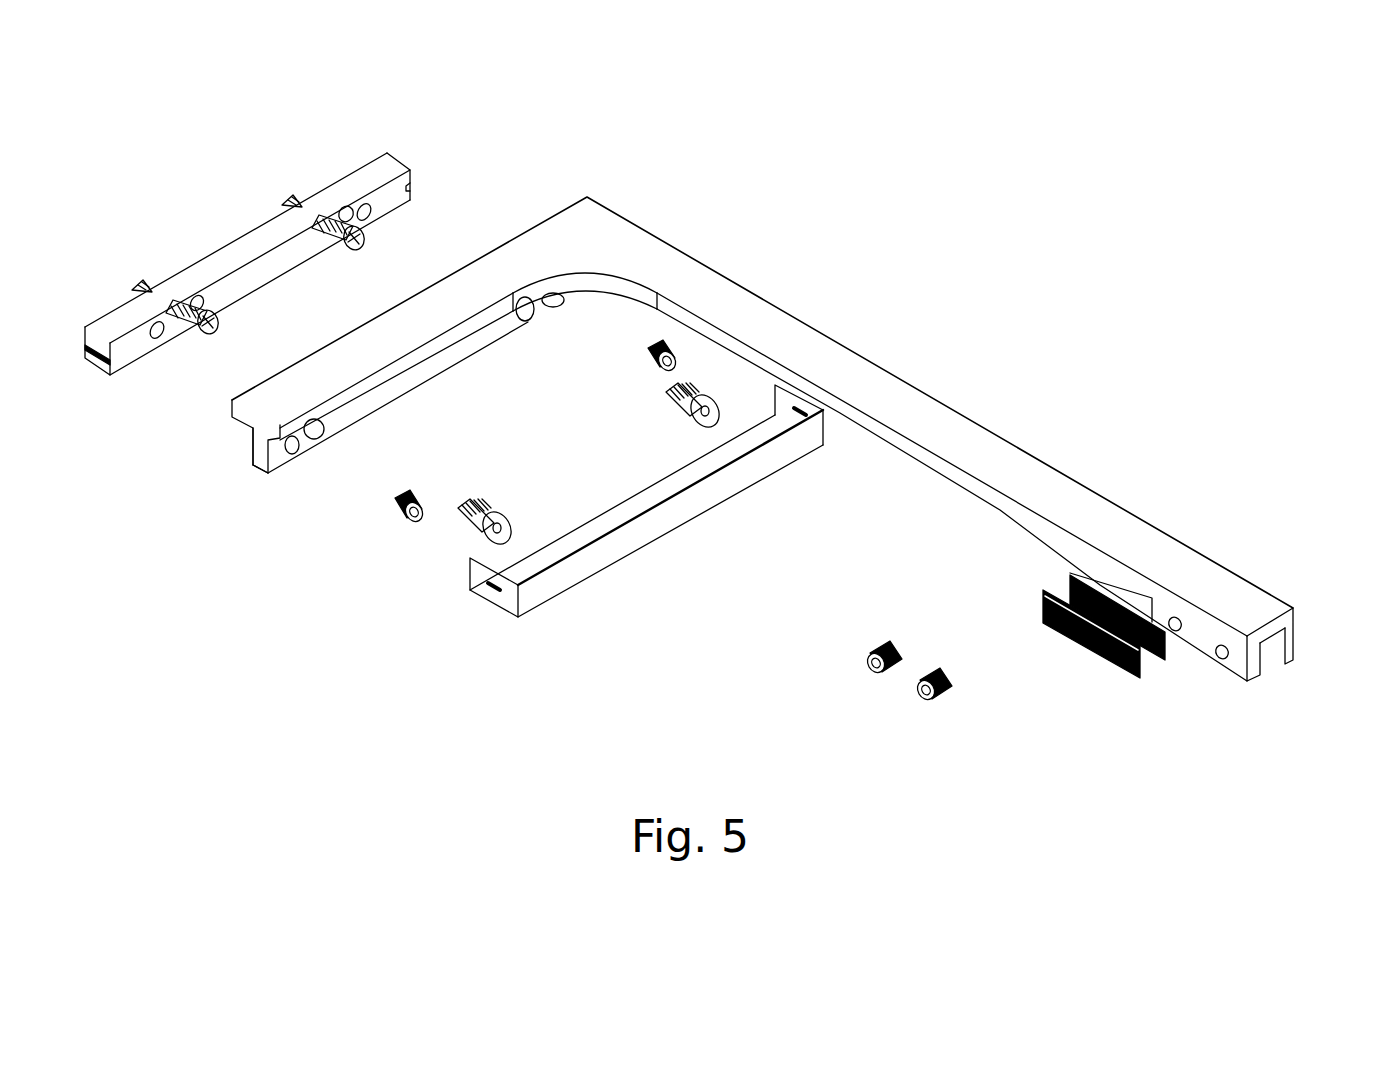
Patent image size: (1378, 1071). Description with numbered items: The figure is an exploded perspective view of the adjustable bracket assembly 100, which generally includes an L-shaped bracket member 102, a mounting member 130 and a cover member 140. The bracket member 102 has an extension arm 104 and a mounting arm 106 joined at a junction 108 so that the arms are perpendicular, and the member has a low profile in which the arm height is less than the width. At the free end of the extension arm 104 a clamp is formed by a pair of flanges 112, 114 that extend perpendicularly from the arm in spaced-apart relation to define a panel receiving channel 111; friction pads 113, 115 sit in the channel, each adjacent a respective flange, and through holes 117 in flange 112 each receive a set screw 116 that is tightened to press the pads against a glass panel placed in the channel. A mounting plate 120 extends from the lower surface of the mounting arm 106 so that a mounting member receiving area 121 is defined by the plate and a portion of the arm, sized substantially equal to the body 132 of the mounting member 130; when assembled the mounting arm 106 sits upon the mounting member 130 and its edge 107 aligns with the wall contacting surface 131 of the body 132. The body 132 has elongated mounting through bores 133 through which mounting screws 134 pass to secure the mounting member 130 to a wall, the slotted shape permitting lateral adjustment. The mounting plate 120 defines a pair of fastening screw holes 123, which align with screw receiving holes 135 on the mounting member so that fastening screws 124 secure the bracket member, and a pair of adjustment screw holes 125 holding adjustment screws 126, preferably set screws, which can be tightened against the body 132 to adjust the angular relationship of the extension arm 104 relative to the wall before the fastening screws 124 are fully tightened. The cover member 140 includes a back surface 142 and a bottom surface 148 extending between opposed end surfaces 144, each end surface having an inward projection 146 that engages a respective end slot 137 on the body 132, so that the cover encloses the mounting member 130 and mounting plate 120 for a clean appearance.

The adjustable bracket assembly 100 is at (860, 267).
The L-shaped bracket member 102 is at (957, 403).
The extension arm 104 is at (1027, 462).
The mounting arm 106 is at (263, 402).
The edge 107 is at (433, 280).
The junction 108 is at (606, 230).
The panel receiving channel 111 is at (1272, 660).
The flange 112 is at (1256, 674).
The friction pad 113 is at (1116, 650).
The flange 114 is at (1297, 655).
The friction pad 115 is at (1066, 575).
The set screw 116 is at (883, 672).
The through hole 117 is at (1178, 632).
The mounting plate 120 is at (277, 470).
The mounting member receiving area 121 is at (243, 452).
The fastening screw hole 123 is at (520, 325).
The fastening screw 124 is at (478, 510).
The adjustment screw hole 125 is at (553, 307).
The adjustment screw 126 is at (413, 500).
The mounting member 130 is at (405, 146).
The wall contacting surface 131 is at (233, 242).
The mounting member body 132 is at (273, 272).
The mounting through bore 133 is at (345, 212).
The mounting screw 134 is at (353, 250).
The screw receiving hole 135 is at (370, 215).
The end slot 137 is at (97, 353).
The cover member 140 is at (494, 620).
The back surface 142 is at (630, 548).
The end surface 144 is at (472, 583).
The inward projection 146 is at (498, 592).
The bottom surface 148 is at (577, 535).